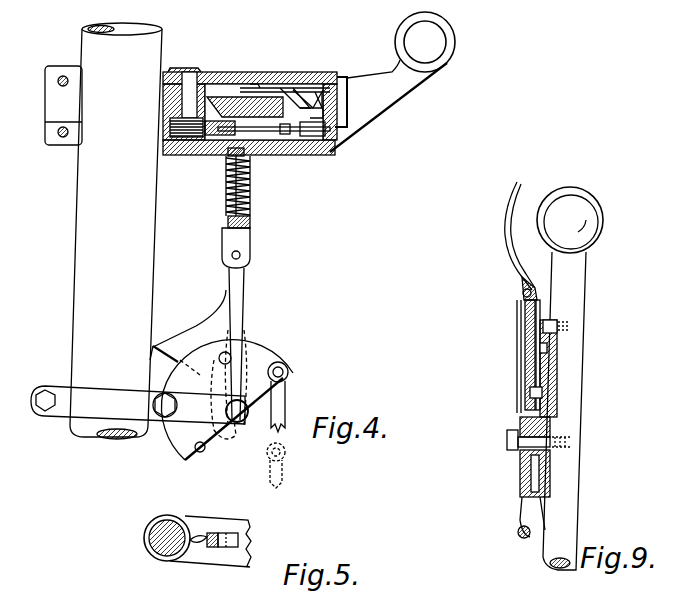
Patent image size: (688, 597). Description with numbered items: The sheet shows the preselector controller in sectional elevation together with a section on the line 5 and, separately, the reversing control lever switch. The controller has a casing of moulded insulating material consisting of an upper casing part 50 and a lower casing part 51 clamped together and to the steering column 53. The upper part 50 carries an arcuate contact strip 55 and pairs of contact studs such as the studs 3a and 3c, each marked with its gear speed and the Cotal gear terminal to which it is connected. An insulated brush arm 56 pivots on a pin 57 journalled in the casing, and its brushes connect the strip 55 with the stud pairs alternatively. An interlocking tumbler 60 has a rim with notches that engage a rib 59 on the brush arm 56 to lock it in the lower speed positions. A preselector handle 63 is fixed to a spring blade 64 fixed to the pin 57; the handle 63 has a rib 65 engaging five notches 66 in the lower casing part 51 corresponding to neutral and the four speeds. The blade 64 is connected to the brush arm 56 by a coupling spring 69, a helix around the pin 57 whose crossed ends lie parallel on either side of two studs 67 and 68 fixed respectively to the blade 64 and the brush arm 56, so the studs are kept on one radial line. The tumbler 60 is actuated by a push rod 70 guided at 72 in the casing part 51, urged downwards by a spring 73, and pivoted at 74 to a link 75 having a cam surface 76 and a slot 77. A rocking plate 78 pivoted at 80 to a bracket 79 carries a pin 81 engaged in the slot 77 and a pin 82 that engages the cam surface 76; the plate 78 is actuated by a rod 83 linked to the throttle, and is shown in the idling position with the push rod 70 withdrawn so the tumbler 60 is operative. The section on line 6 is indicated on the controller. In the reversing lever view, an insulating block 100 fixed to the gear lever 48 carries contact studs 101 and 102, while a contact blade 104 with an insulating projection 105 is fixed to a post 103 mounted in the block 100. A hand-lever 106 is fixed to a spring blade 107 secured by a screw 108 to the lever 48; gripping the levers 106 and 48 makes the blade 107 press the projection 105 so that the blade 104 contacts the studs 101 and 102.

In FIG. 4, the steering column 53 is at (144, 37).
In FIG. 4, the pin 57 is at (188, 90).
In FIG. 5, the pin 57 is at (155, 538).
In FIG. 4, the rib 59 is at (228, 107).
In FIG. 4, the interlocking tumbler 60 is at (263, 85).
In FIG. 4, the arcuate contact strip 55 is at (297, 84).
In FIG. 4, the contact stud 3c is at (315, 82).
In FIG. 4, the upper casing part 50 is at (322, 86).
In FIG. 4, the contact stud 3a is at (333, 84).
In FIG. 4, the preselector handle 63 is at (447, 52).
In FIG. 4, the brush arm 56 is at (352, 141).
In FIG. 4, the coupling spring 69 is at (168, 127).
In FIG. 5, the coupling spring 69 is at (186, 518).
In FIG. 4, the spring blade 64 is at (218, 140).
In FIG. 4, the rib 65 is at (312, 122).
In FIG. 4, the notches 66 is at (331, 152).
In FIG. 4, the lower casing part 51 is at (305, 158).
In FIG. 4, the stud 68 is at (228, 154).
In FIG. 5, the stud 68 is at (214, 533).
In FIG. 4, the stud 67 is at (232, 205).
In FIG. 5, the stud 67 is at (233, 535).
In FIG. 4, the spring 73 is at (247, 192).
In FIG. 4, the push rod 70 is at (250, 220).
In FIG. 4, the guide 72 is at (228, 210).
In FIG. 4, the pivot 74 is at (248, 255).
In FIG. 4, the link 75 is at (228, 302).
In FIG. 4, the slot 77 is at (248, 338).
In FIG. 4, the pin 81 is at (220, 353).
In FIG. 4, the cam surface 76 is at (152, 355).
In FIG. 4, the bracket 79 is at (82, 390).
In FIG. 4, the rocking plate 78 is at (173, 432).
In FIG. 4, the pin 82 is at (196, 450).
In FIG. 4, the pivot 80 is at (242, 420).
In FIG. 4, the rod 83 is at (284, 395).
In FIG. 4, the section line 5— 5 is at (150, 117).
In FIG. 4, the section line 6— 6 is at (95, 81).
In FIG. 9, the reversing lever 48 is at (573, 293).
In FIG. 9, the hand-lever 106 is at (503, 232).
In FIG. 9, the contact stud 101 is at (560, 322).
In FIG. 9, the contact blade 104 is at (532, 337).
In FIG. 9, the insulating projection 105 is at (530, 352).
In FIG. 9, the insulating block 100 is at (557, 347).
In FIG. 9, the spring blade 107 is at (517, 380).
In FIG. 9, the contact stud 102 is at (547, 370).
In FIG. 9, the post 103 is at (542, 393).
In FIG. 9, the screw 108 is at (508, 437).